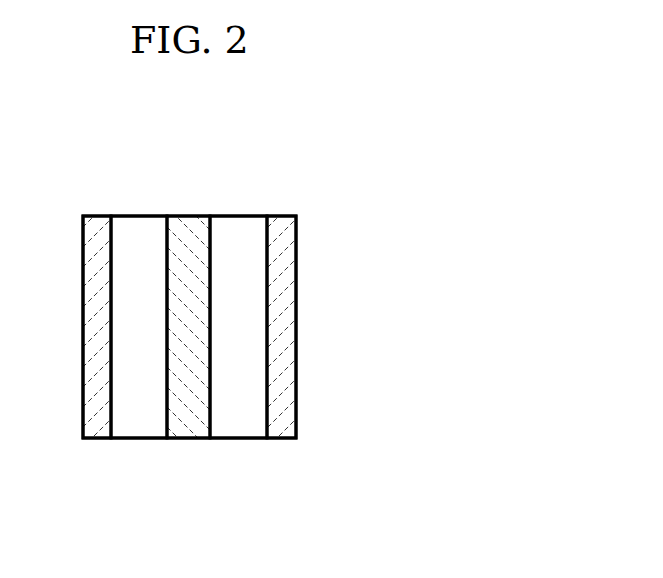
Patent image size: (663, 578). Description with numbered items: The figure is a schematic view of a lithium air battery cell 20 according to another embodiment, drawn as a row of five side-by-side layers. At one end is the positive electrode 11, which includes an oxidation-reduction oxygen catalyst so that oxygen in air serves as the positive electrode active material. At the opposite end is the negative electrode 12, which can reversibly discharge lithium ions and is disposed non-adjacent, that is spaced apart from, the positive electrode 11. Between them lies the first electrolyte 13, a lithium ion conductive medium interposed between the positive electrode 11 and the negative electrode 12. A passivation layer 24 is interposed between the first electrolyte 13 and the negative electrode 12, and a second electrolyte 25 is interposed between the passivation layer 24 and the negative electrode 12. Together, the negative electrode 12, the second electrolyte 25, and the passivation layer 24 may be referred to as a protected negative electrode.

The lithium air battery cell 20 is at (322, 208).
The negative electrode 12 is at (100, 220).
The second electrolyte 25 is at (140, 222).
The passivation layer 24 is at (191, 222).
The first electrolyte 13 is at (241, 222).
The positive electrode 11 is at (284, 222).